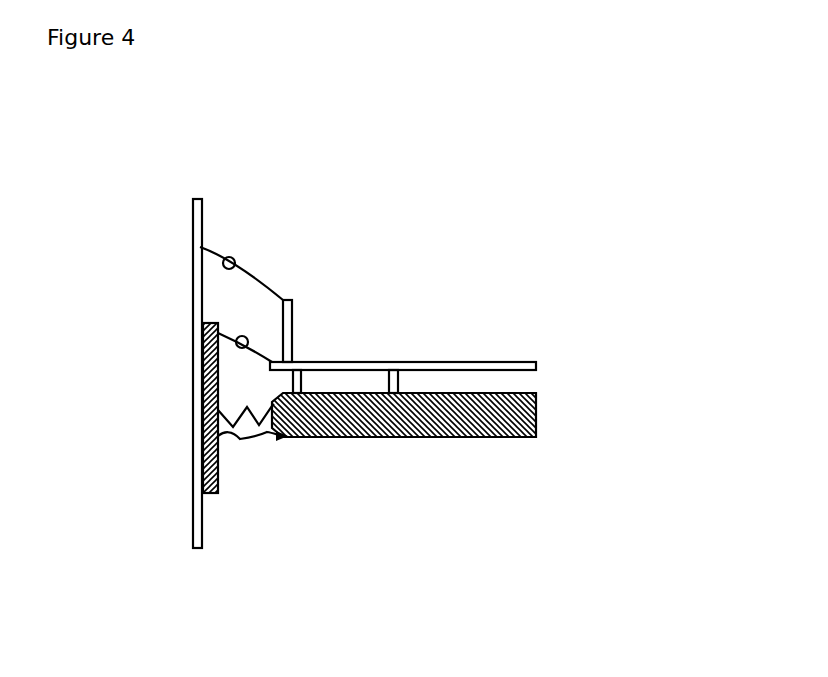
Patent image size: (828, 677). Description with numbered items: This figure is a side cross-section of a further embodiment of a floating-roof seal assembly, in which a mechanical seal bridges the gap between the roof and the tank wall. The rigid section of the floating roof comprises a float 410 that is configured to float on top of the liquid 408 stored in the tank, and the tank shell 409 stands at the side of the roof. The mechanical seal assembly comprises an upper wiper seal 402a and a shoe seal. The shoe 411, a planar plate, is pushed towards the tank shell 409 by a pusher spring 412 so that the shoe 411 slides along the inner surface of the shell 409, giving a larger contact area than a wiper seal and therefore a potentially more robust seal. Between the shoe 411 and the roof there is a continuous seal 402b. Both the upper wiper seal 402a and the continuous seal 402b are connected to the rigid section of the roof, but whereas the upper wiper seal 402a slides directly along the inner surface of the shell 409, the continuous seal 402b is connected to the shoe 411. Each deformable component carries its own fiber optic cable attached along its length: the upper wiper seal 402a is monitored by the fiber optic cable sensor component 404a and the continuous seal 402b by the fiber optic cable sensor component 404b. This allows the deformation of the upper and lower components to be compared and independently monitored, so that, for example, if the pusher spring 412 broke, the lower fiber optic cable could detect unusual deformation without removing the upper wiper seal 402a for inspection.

The upper wiper seal 402a is at (268, 292).
The continuous seal 402b is at (262, 360).
The fiber optic cable sensor component 404a is at (230, 257).
The fiber optic cable sensor component 404b is at (242, 336).
The liquid 408 is at (242, 440).
The tank shell 409 is at (199, 274).
The float 410 is at (513, 416).
The shoe 411 is at (199, 400).
The pusher spring 412 is at (260, 428).